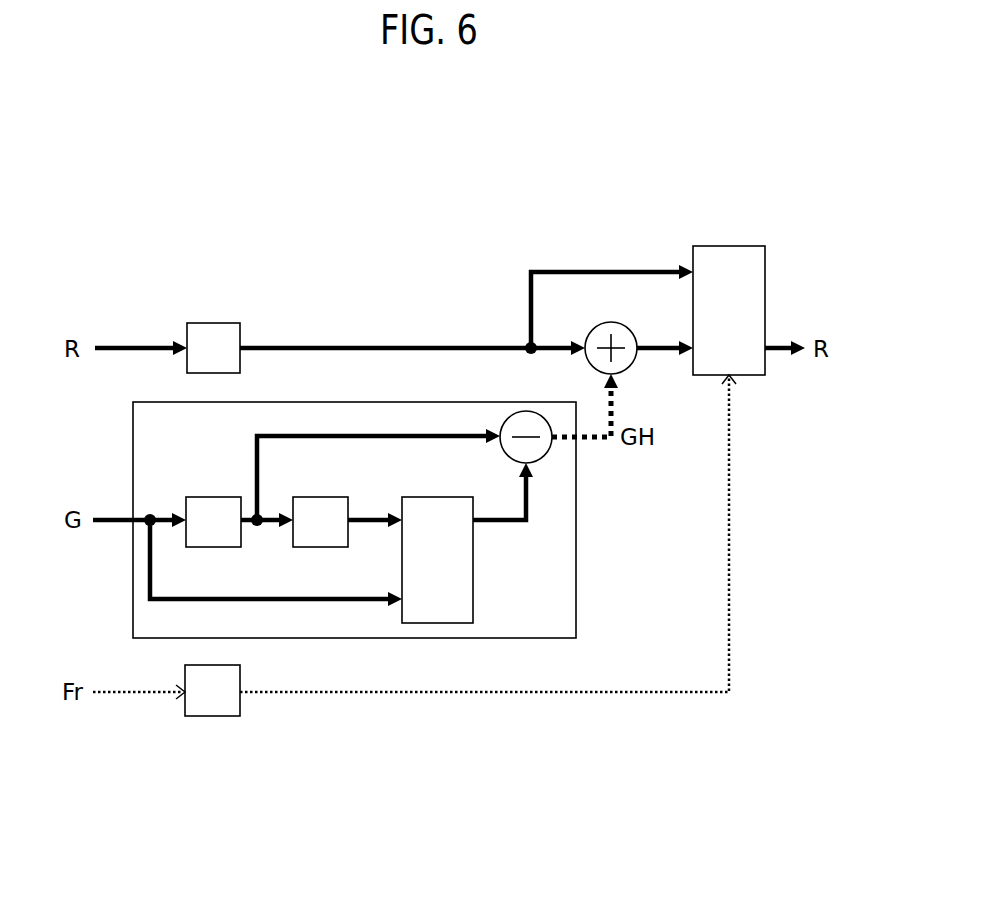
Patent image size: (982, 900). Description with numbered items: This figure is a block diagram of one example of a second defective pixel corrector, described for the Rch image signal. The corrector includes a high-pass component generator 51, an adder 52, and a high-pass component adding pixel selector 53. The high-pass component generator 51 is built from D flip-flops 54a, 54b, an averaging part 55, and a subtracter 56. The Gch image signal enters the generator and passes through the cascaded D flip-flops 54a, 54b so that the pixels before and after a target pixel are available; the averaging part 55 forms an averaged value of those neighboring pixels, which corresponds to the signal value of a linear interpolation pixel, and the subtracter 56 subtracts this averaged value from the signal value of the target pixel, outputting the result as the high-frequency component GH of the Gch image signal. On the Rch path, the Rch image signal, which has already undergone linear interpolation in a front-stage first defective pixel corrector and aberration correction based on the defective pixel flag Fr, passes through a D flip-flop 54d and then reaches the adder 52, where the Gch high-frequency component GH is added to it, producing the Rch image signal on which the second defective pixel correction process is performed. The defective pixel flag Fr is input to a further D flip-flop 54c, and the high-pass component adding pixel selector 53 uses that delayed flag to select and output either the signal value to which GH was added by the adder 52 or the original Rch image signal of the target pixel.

The high-pass component generator 51 is at (357, 388).
The adder 52 is at (632, 327).
The high-pass component adding pixel selector 53 is at (738, 223).
The D flip-flop 54a is at (208, 495).
The D flip-flop 54b is at (315, 495).
The D flip-flop 54c is at (217, 716).
The D flip-flop 54d is at (207, 322).
The averaging part 55 is at (473, 547).
The subtracter 56 is at (549, 452).